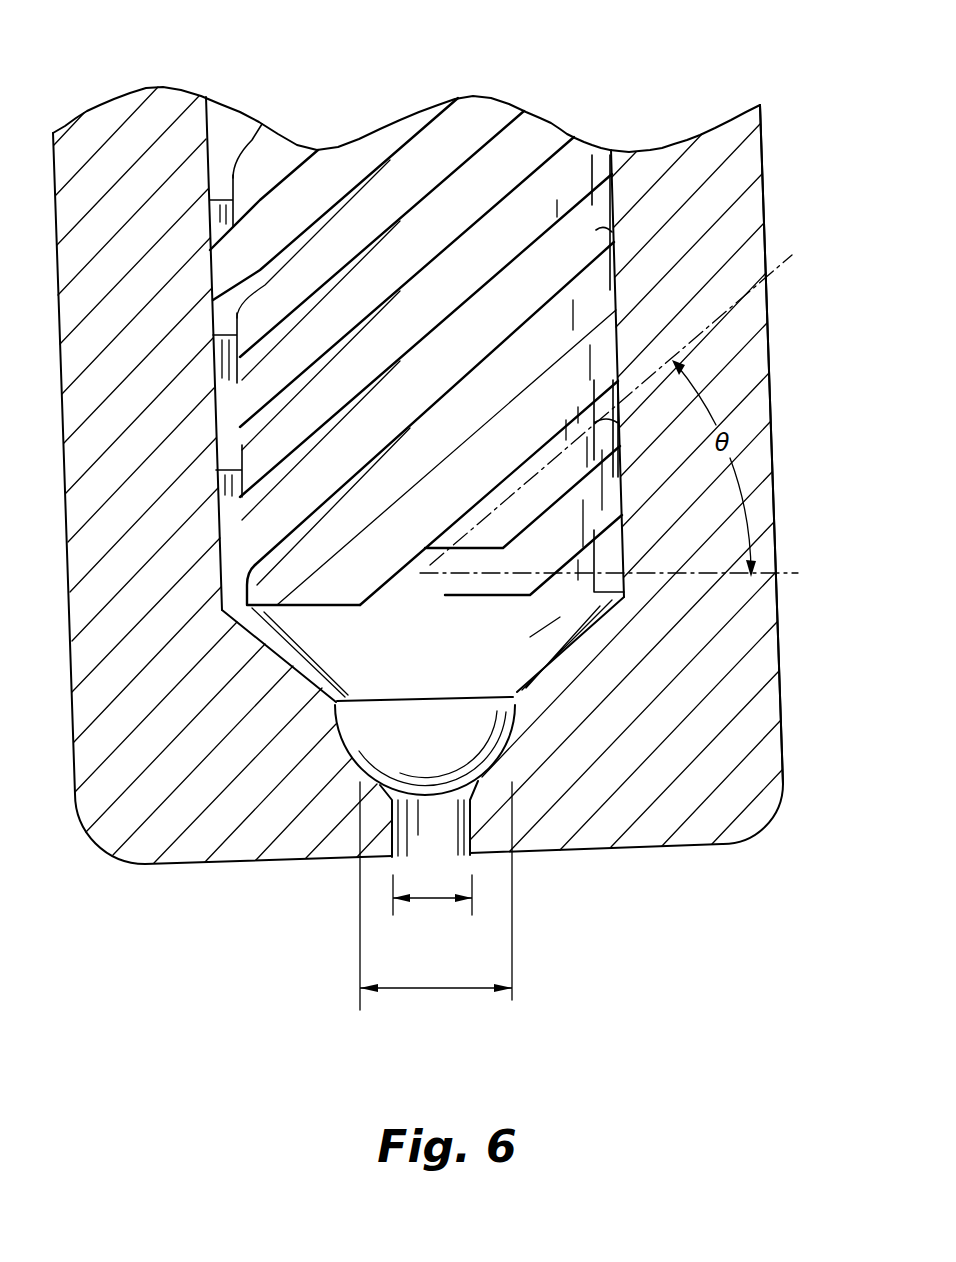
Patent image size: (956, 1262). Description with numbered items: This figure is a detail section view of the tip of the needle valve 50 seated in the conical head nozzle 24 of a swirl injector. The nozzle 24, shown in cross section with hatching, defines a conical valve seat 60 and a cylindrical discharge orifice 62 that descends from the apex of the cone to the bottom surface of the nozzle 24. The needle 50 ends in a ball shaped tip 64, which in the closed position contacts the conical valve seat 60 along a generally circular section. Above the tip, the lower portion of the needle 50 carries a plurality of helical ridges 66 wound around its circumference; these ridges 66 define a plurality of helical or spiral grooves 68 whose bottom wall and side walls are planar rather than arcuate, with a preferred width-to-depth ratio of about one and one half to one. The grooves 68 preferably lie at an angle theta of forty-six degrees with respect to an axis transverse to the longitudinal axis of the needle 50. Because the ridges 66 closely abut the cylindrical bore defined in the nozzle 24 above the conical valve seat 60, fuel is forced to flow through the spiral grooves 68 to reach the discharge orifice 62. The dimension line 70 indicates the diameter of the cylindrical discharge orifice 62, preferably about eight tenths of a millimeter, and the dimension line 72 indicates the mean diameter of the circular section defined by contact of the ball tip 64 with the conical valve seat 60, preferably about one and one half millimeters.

The needle valve 50 is at (331, 124).
The conical head nozzle 24 is at (770, 546).
The helical ridges 66 is at (417, 318).
The helical grooves 68 is at (485, 114).
The conical valve seat 60 is at (546, 694).
The ball shaped tip 64 is at (406, 742).
The cylindrical discharge orifice 62 is at (473, 831).
The dimension line 70 is at (433, 899).
The dimension line 72 is at (437, 989).